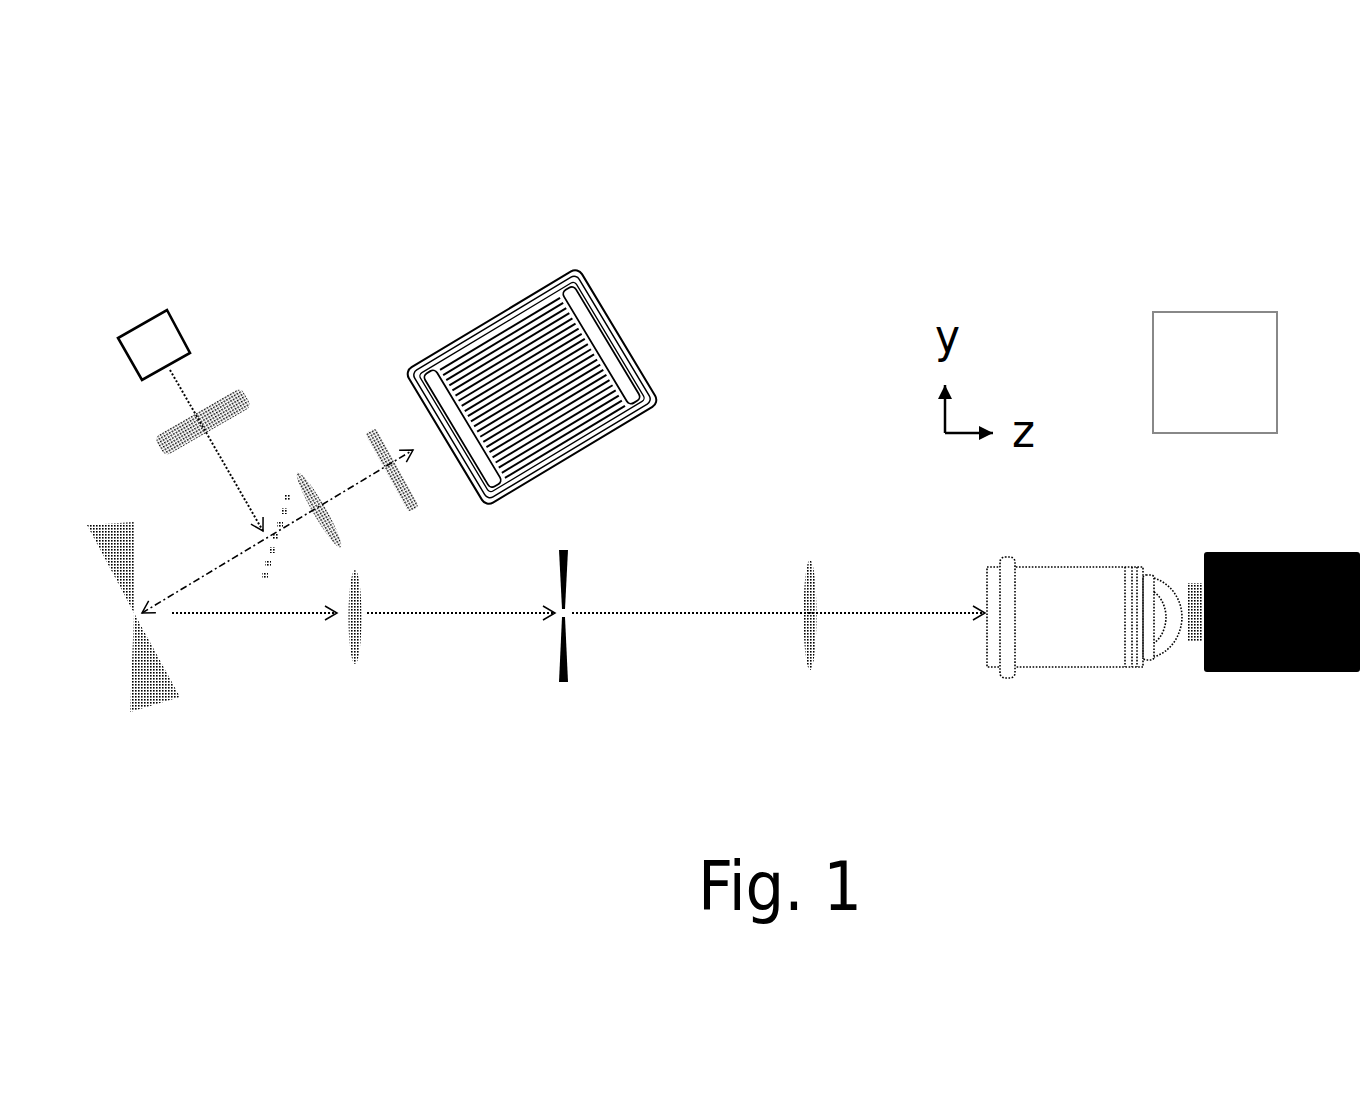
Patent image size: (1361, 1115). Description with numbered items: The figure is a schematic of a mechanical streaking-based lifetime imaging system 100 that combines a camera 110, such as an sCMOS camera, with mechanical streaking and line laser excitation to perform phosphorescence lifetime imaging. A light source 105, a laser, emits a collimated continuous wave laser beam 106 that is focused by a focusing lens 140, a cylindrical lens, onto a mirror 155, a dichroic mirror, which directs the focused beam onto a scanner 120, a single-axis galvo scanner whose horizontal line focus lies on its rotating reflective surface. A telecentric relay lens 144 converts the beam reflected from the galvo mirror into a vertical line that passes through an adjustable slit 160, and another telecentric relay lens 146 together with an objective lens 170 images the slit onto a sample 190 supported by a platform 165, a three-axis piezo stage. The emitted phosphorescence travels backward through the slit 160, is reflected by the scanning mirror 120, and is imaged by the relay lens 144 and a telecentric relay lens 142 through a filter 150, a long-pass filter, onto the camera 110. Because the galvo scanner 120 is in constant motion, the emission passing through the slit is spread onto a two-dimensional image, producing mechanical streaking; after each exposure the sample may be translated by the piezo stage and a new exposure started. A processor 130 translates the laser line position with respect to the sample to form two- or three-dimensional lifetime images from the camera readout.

The mechanical streaking-based lifetime imaging system 100 is at (180, 160).
The light source 105 is at (180, 330).
The laser beam 106 is at (185, 390).
The camera 110 is at (577, 268).
The scanner 120 is at (140, 713).
The processor 130 is at (1225, 311).
The focusing lens 140 is at (158, 440).
The telecentric relay lens L1 142 is at (297, 470).
The telecentric relay lens L2 144 is at (358, 637).
The telecentric relay lens L3 146 is at (812, 665).
The filter 150 is at (410, 513).
The mirror 155 is at (265, 582).
The slit 160 is at (565, 660).
The platform 165 is at (1310, 672).
The objective lens 170 is at (1038, 667).
The sample 190 is at (1198, 642).